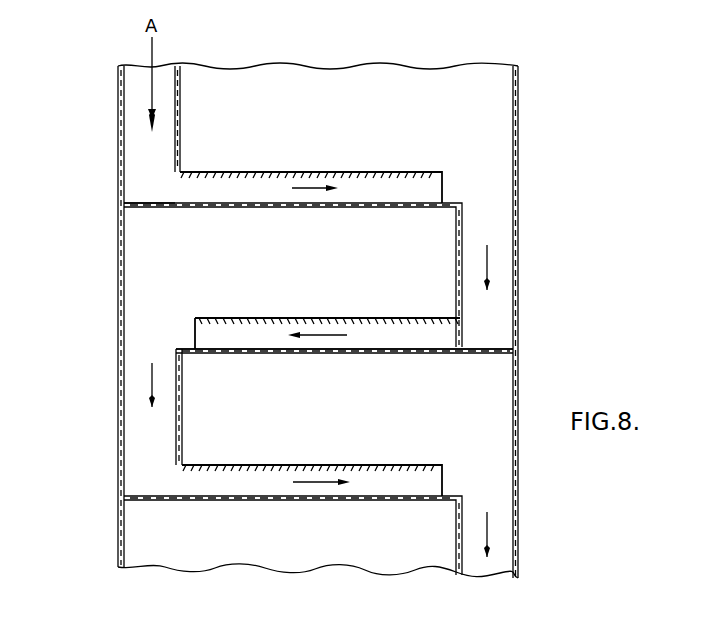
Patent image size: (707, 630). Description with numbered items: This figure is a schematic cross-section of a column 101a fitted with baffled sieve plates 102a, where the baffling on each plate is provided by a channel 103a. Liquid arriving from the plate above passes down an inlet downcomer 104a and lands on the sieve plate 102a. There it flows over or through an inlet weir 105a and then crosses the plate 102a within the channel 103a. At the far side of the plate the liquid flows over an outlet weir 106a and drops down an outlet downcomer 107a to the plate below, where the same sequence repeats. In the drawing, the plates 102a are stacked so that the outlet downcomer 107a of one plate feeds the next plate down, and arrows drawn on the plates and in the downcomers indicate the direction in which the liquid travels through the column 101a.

The column 101a is at (118, 312).
The baffled sieve plate 102a is at (327, 205).
The channel 103a is at (333, 172).
The inlet downcomer 104a is at (140, 103).
The inlet weir 105a is at (177, 185).
The outlet weir 106a is at (472, 165).
The outlet downcomer 107a is at (500, 285).